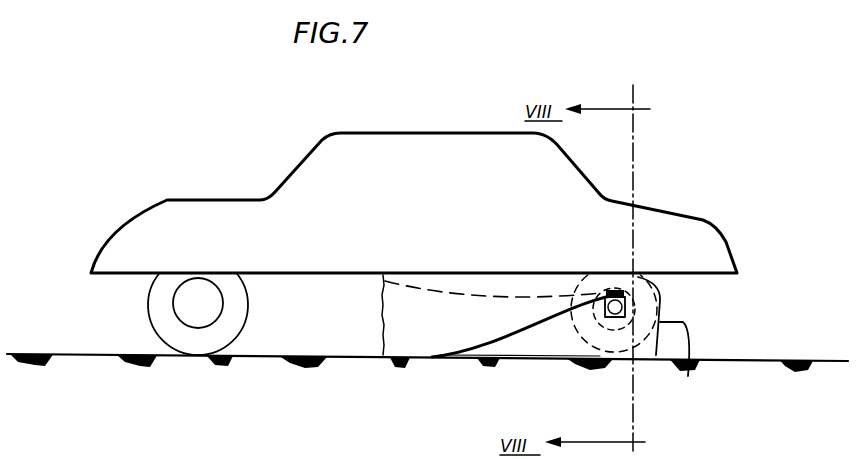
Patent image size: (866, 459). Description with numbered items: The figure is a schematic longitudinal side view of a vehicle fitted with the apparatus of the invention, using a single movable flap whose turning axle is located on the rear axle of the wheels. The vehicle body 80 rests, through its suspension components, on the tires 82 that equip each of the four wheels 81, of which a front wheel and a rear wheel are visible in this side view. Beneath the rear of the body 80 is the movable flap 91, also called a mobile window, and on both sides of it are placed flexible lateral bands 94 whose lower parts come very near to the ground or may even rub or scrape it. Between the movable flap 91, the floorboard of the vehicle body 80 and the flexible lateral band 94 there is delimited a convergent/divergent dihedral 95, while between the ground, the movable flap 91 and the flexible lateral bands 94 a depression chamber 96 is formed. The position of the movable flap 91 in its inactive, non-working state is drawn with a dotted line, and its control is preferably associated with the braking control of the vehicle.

The vehicle body 80 is at (282, 197).
The wheel 81 is at (195, 318).
The tire 82 is at (233, 330).
The movable flap 91 is at (490, 330).
The flexible lateral band 94 is at (395, 311).
The convergent/divergent dihedral 95 is at (440, 318).
The depression chamber 96 is at (547, 338).